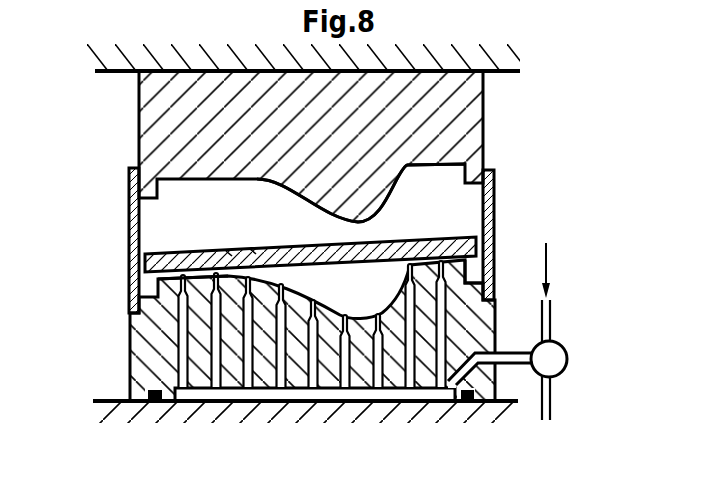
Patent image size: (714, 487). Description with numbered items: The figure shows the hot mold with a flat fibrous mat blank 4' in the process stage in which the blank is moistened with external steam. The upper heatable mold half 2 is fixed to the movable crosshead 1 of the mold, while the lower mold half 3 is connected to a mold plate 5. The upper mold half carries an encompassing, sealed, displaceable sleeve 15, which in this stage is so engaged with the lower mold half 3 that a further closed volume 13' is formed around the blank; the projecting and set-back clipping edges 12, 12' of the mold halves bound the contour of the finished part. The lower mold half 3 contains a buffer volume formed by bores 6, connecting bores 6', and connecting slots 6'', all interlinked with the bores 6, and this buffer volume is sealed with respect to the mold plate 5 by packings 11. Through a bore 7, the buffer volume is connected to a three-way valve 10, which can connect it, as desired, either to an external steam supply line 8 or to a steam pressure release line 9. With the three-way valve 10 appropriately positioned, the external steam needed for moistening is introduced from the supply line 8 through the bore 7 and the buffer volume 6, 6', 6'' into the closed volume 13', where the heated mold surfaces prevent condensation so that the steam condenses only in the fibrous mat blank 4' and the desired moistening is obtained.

The movable crosshead 1 is at (107, 53).
The upper heatable mold half 2 is at (148, 117).
The lower mold half 3 is at (138, 342).
The fibrous mat blank 4' is at (282, 254).
The mold plate 5 is at (145, 415).
The bores 6 is at (312, 371).
The connecting bores 6' is at (256, 231).
The connecting slots 6'' is at (361, 396).
The bore 7 is at (512, 353).
The external steam supply line 8 is at (550, 317).
The steam pressure release line 9 is at (548, 405).
The three-way valve 10 is at (560, 368).
The packings 11 is at (155, 402).
The projecting clipping edge 12 is at (359, 193).
The set-back clipping edge 12' is at (510, 257).
The further closed volume 13' is at (311, 230).
The displaceable sleeve 15 is at (130, 193).